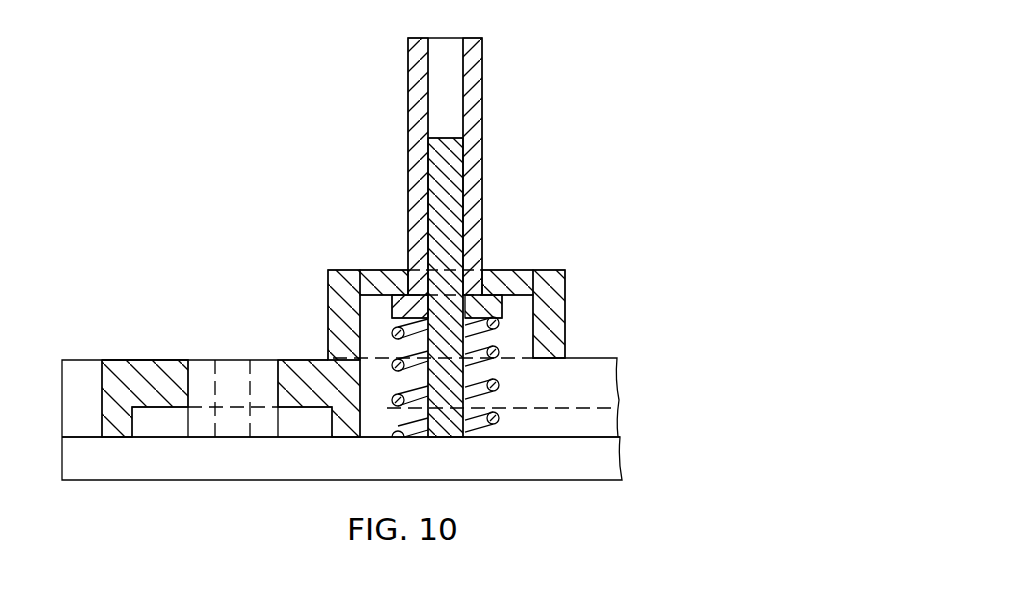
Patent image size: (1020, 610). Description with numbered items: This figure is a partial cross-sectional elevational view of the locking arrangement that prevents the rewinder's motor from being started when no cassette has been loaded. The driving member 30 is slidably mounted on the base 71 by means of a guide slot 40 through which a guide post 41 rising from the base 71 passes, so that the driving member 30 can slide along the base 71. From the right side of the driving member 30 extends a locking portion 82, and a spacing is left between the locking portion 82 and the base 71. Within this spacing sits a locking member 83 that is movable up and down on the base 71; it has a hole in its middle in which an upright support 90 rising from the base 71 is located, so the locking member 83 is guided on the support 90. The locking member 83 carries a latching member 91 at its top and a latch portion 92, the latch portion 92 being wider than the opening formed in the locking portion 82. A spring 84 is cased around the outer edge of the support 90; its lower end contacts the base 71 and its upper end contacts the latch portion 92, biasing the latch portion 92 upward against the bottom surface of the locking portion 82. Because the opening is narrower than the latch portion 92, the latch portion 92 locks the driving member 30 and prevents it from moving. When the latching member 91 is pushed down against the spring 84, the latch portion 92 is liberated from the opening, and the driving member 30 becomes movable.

The driving member 30 is at (127, 372).
The guide slot 40 is at (196, 372).
The guide post 41 is at (262, 368).
The base 71 is at (619, 463).
The locking portion 82 is at (353, 270).
The locking member 83 is at (642, 280).
The spring 84 is at (394, 331).
The upright support 90 is at (444, 148).
The latching member 91 is at (483, 65).
The latch portion 92 is at (503, 311).